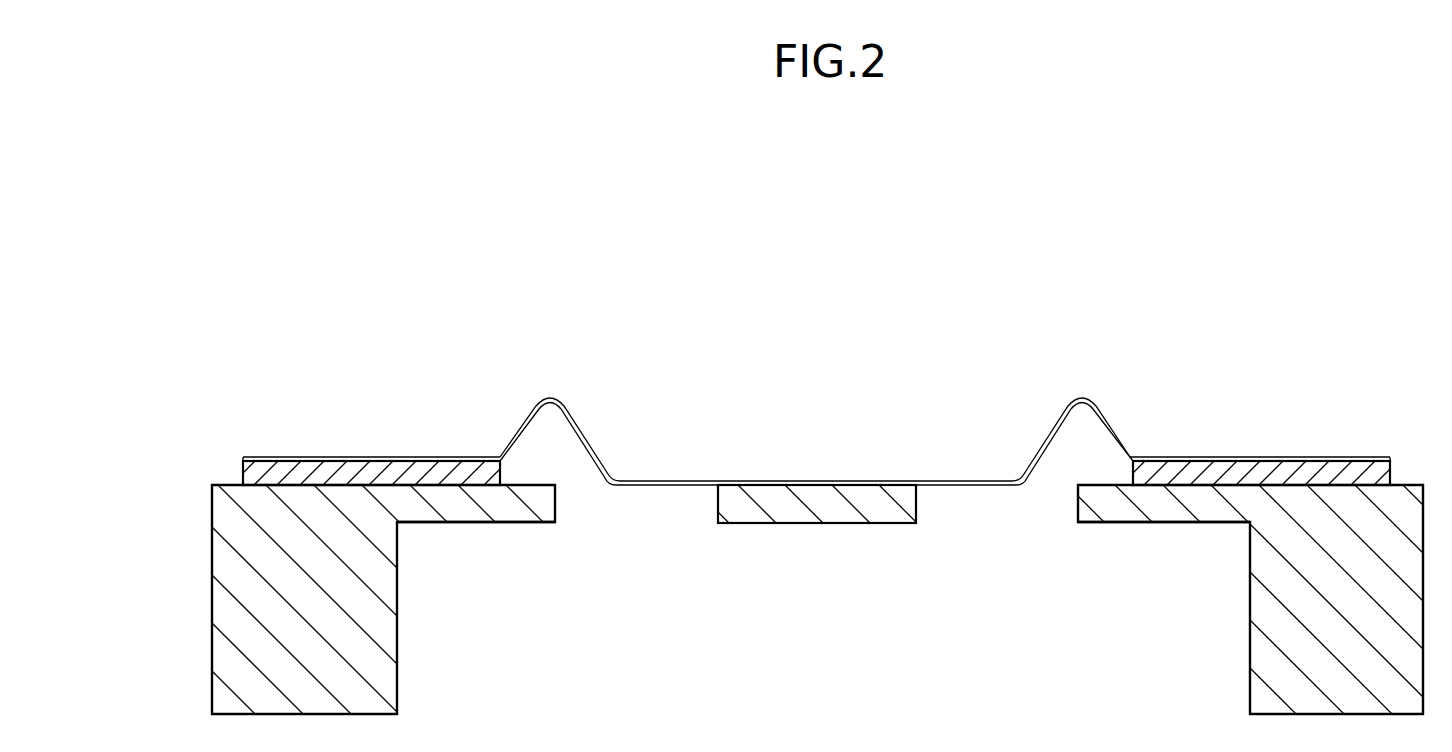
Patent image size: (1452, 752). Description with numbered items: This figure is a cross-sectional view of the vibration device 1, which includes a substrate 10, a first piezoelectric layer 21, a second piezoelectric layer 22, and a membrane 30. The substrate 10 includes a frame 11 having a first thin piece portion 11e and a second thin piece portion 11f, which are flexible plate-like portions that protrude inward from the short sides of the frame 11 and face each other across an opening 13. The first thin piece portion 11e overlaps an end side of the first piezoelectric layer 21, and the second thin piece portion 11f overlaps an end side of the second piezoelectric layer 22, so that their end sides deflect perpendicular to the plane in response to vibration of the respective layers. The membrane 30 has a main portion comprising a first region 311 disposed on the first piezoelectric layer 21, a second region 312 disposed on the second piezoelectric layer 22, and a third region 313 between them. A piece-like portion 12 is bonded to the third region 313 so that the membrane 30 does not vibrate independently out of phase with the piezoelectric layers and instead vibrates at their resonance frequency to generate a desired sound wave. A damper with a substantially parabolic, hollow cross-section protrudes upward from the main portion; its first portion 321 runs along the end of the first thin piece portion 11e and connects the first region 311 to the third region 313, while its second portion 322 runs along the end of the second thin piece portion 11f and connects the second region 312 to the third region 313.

The vibration device 1 is at (781, 284).
The substrate 10 is at (200, 596).
The frame 11 is at (212, 553).
The first thin piece portion 11e is at (476, 524).
The second thin piece portion 11f is at (1162, 524).
The piece-like portion 12 is at (847, 505).
The opening 13 is at (780, 566).
The first piezoelectric layer 21 is at (396, 470).
The second piezoelectric layer 22 is at (1248, 470).
The membrane 30 is at (455, 446).
The first region 311 is at (336, 456).
The second region 312 is at (1296, 456).
The third region 313 is at (852, 481).
The first portion 321 is at (551, 396).
The second portion 322 is at (1084, 396).